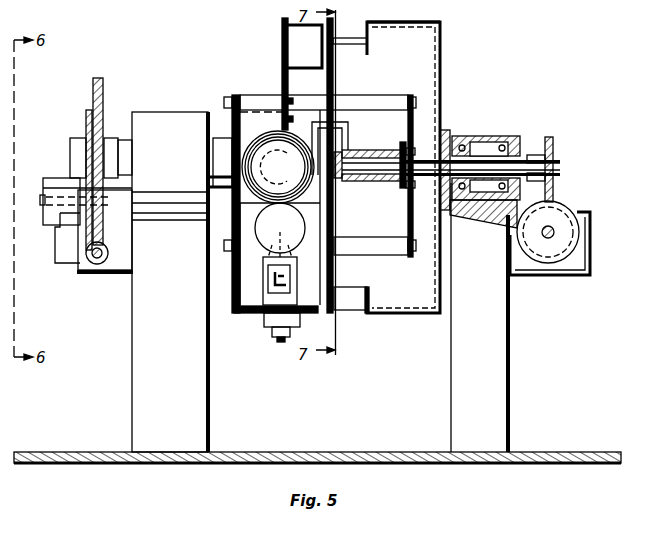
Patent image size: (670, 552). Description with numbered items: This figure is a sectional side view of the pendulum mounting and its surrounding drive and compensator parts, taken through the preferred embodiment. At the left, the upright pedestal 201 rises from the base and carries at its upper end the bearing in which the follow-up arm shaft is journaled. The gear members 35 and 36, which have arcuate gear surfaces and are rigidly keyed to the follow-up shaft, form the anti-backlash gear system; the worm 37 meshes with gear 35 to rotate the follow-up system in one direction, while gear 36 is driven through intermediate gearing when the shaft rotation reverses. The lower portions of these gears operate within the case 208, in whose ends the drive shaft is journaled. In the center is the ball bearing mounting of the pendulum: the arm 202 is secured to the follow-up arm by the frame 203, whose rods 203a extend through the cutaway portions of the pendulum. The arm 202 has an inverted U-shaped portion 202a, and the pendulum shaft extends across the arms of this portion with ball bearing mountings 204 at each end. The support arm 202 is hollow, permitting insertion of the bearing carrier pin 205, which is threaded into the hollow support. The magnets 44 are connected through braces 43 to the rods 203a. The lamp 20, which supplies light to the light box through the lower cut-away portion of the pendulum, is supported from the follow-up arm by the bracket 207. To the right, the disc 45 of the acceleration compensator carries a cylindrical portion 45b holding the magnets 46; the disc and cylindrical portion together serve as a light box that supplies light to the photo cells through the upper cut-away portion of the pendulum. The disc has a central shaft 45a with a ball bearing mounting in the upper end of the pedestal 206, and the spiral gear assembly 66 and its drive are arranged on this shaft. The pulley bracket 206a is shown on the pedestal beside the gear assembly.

The lamp 20 is at (268, 262).
The gear member 35 is at (103, 100).
The gear member 36 is at (86, 112).
The worm 37 is at (110, 252).
The braces 43 is at (283, 105).
The magnets 44 is at (300, 48).
The disc 45 is at (440, 75).
The central shaft 45a is at (524, 133).
The cylindrical portion 45b is at (403, 39).
The magnets 46 is at (357, 40).
The spiral gear assembly 66 is at (565, 212).
The upright pedestal 201 is at (176, 122).
The arm 202 is at (451, 179).
The inverted U-shaped portion 202a is at (348, 137).
The frame 203 is at (415, 240).
The rods 203a is at (365, 100).
The ball bearing mountings 204 is at (331, 180).
The bearing carrier pin 205 is at (398, 182).
The pedestal 206 is at (498, 365).
The pulley bracket 206a is at (560, 268).
The bracket 207 is at (248, 316).
The case 208 is at (115, 272).